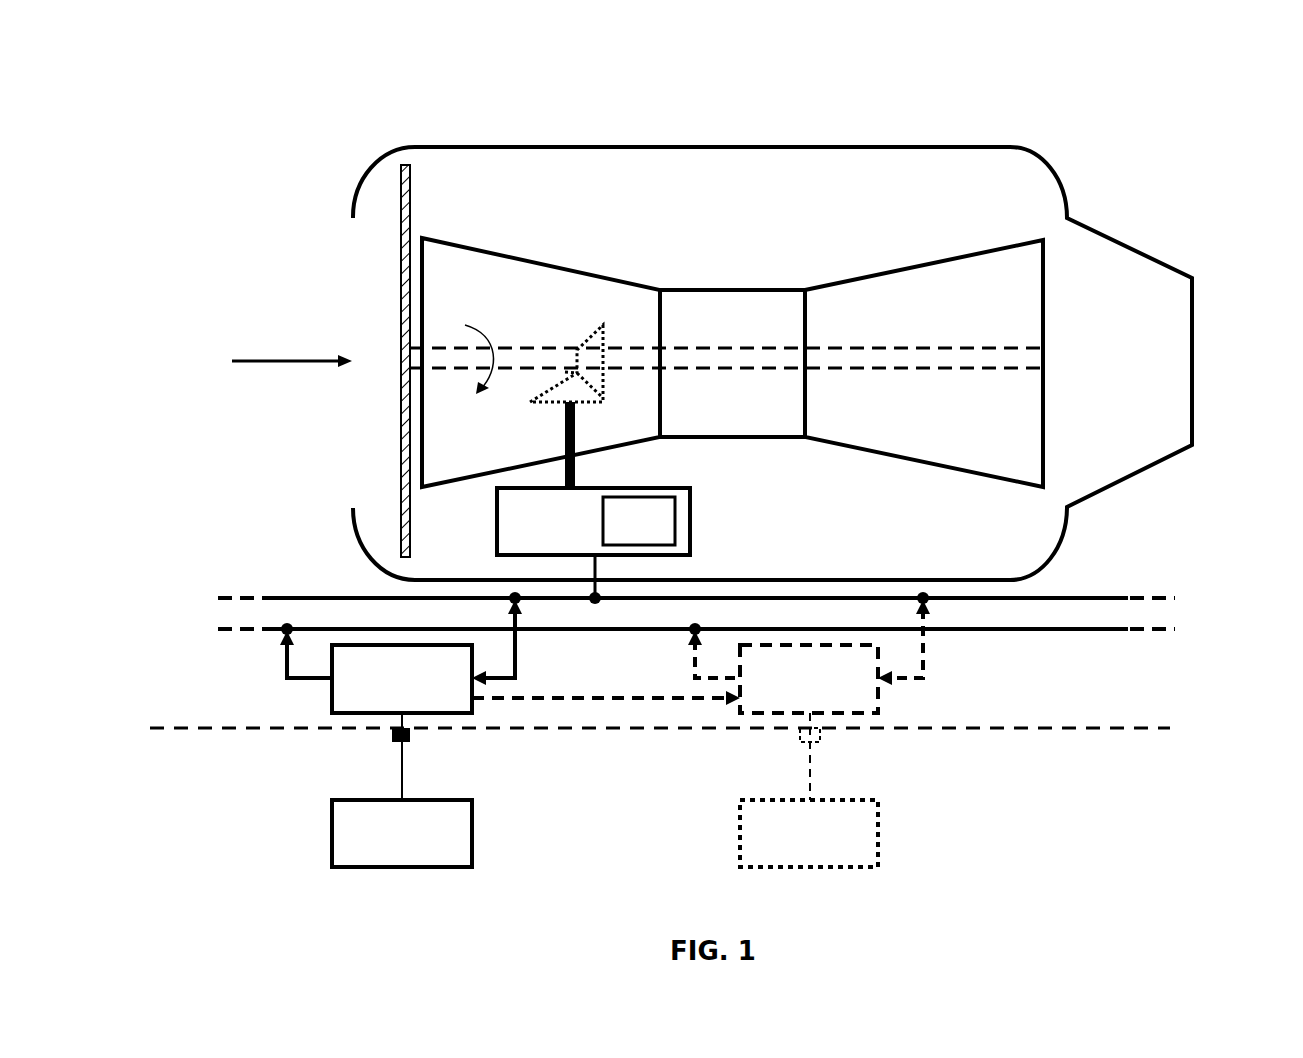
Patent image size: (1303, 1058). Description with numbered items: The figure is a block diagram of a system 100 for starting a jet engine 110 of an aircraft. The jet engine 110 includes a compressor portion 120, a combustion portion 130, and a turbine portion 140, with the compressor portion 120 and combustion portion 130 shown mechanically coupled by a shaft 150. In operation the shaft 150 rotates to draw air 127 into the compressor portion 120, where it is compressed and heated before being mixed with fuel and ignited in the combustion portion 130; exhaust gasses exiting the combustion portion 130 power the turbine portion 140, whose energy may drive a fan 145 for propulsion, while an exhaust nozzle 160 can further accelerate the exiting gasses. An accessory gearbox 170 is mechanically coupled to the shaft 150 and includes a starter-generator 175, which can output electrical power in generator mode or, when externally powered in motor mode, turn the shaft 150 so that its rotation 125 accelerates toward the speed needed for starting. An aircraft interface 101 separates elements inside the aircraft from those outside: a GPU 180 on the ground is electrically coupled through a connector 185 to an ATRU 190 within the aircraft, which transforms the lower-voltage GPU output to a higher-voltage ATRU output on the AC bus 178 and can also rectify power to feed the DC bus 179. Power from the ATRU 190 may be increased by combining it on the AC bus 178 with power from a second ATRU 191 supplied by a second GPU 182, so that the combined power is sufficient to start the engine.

The system 100 is at (198, 83).
The jet engine 110 is at (708, 146).
The fan 145 is at (410, 220).
The compressor portion 120 is at (560, 267).
The rotation 125 is at (488, 337).
The combustion portion 130 is at (736, 290).
The turbine portion 140 is at (918, 266).
The shaft 150 is at (890, 348).
The exhaust nozzle 160 is at (1187, 353).
The air 127 is at (285, 360).
The accessory gearbox 170 is at (690, 521).
The starter-generator 175 is at (638, 497).
The AC bus 178 is at (1202, 598).
The DC bus 179 is at (1202, 629).
The ATRU 190 is at (332, 698).
The second ATRU 191 is at (878, 698).
The aircraft interface 101 is at (215, 727).
The connector 185 is at (412, 740).
The GPU 180 is at (353, 800).
The second GPU 182 is at (782, 800).